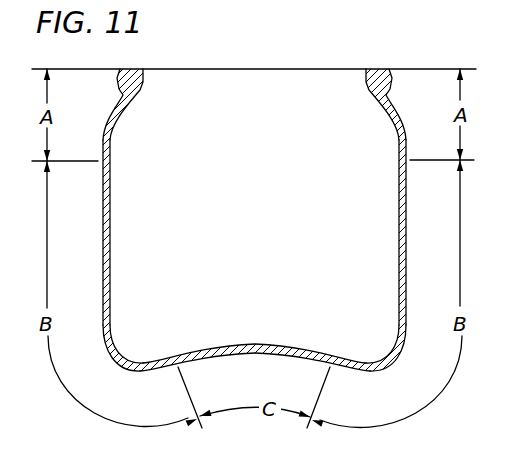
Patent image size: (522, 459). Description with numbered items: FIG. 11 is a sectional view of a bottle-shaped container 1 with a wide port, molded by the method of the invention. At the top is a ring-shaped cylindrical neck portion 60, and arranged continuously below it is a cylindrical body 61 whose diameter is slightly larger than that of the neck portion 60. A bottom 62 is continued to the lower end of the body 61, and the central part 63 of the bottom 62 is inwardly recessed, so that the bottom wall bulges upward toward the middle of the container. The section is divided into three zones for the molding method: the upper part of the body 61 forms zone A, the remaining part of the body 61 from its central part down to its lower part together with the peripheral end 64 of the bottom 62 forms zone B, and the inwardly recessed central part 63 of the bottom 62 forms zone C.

The bottle-shaped container 1 is at (102, 249).
The cylindrical neck portion 60 is at (272, 112).
The cylindrical body 61 is at (278, 232).
The bottom 62 is at (203, 352).
The central part 63 is at (257, 348).
The peripheral end 64 is at (363, 373).